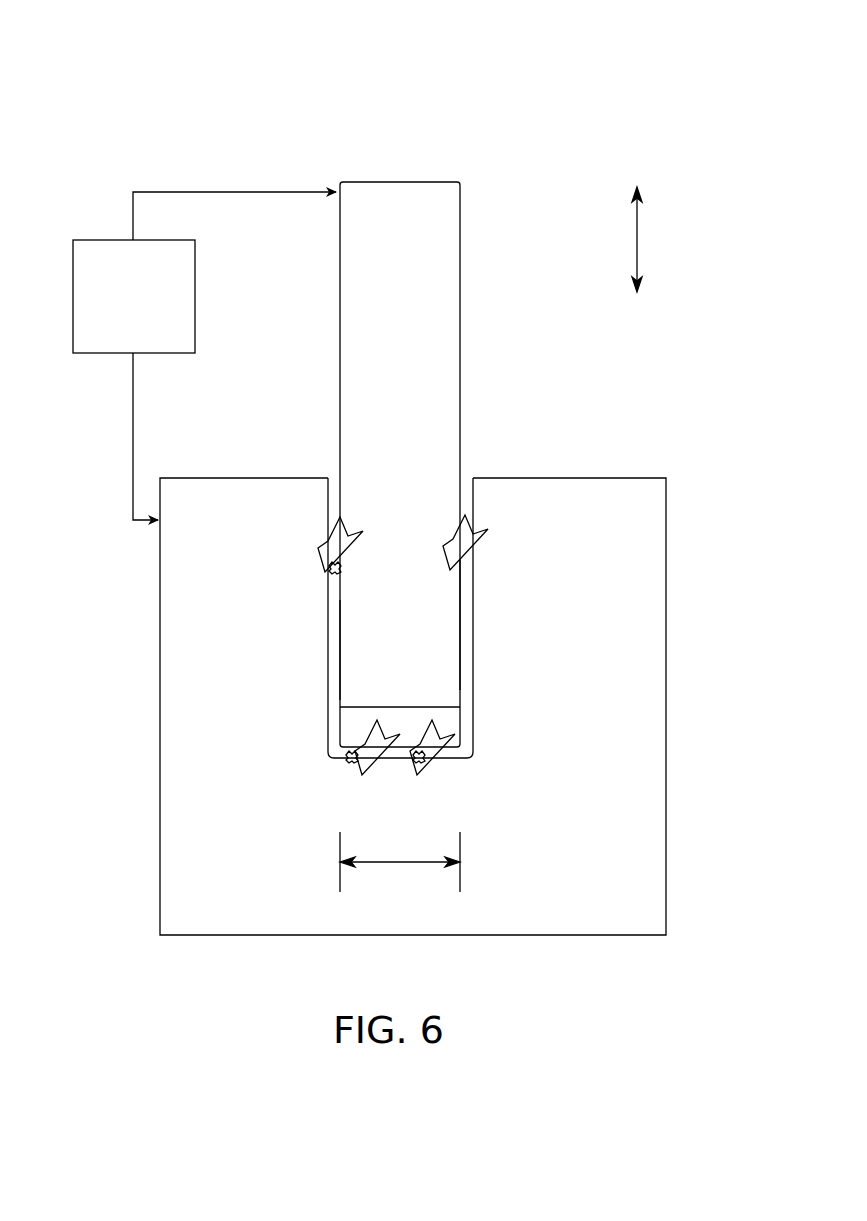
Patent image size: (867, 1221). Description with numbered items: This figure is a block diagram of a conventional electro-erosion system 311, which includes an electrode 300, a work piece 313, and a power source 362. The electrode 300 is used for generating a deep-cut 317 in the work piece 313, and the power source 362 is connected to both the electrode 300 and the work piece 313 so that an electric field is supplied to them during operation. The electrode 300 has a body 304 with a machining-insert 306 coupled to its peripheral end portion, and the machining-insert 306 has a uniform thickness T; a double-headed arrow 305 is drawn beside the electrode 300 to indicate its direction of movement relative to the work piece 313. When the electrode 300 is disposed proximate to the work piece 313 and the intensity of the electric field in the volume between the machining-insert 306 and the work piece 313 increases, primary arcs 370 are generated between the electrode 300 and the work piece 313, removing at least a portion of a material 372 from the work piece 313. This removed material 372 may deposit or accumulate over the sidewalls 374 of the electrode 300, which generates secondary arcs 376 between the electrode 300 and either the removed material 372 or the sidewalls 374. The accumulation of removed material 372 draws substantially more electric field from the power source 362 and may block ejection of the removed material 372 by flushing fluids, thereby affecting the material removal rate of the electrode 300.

The conventional electro-erosion system 311 is at (177, 80).
The electrode 300 is at (469, 464).
The body 304 is at (445, 372).
The direction of movement 305 is at (637, 238).
The machining-insert 306 is at (448, 725).
The work piece 313 is at (419, 706).
The deep-cut 317 is at (333, 620).
The power source 362 is at (110, 340).
The primary arcs 370 is at (445, 752).
The removed portion of material 372 is at (342, 565).
The sidewalls 374 is at (340, 633).
The secondary arcs 376 is at (318, 530).
The thickness T is at (397, 862).